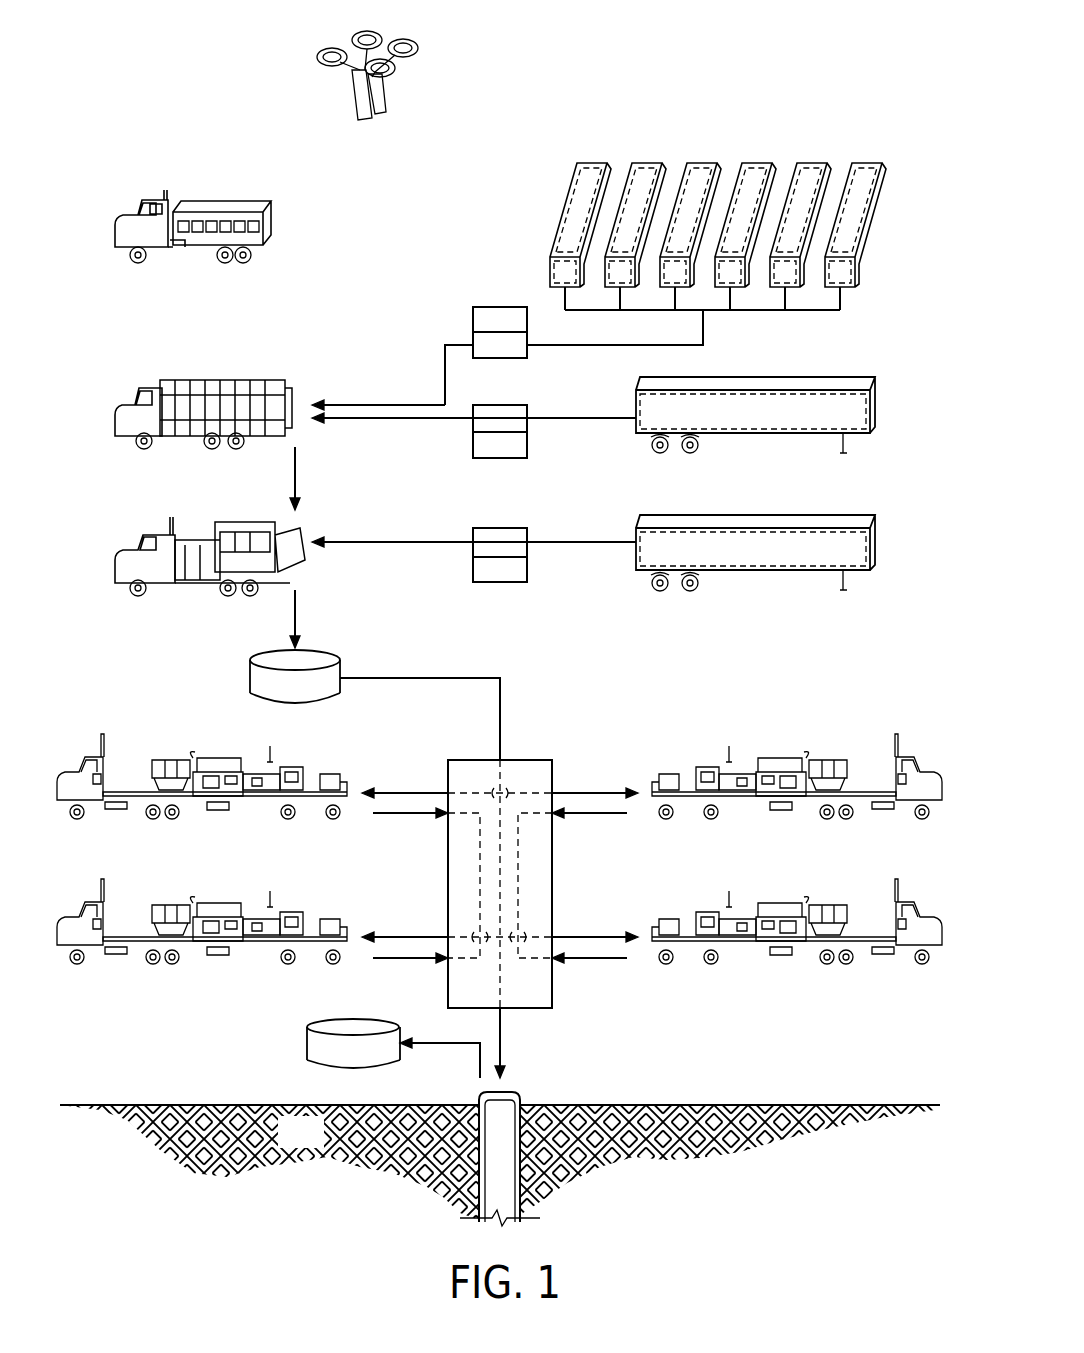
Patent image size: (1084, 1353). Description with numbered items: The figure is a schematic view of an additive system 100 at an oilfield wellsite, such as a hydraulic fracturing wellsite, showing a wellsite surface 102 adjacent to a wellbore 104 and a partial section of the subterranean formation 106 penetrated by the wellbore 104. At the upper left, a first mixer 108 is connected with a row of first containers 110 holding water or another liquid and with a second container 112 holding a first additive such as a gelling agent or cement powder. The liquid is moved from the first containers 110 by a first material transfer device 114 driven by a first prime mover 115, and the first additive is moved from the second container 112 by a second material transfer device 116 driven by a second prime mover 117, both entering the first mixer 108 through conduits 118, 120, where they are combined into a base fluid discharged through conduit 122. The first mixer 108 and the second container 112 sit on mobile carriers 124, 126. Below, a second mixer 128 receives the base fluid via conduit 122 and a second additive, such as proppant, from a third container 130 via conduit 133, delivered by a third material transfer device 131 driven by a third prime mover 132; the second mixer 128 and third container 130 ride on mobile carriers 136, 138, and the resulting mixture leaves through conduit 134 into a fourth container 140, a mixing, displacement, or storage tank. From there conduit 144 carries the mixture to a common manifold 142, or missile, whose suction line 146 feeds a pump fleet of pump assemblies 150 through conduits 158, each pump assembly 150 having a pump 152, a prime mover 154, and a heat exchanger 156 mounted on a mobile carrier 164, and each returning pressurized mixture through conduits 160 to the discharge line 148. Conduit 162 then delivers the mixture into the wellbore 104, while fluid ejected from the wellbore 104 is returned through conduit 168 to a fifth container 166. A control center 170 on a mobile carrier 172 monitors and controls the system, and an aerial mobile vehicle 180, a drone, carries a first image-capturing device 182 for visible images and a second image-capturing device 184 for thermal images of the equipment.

The additive system 100 is at (176, 40).
The wellsite surface 102 is at (728, 1105).
The wellbore 104 is at (515, 1173).
The subterranean formation 106 is at (282, 1146).
The first mixer 108 is at (177, 381).
The first containers 110 is at (595, 163).
The second container 112 is at (776, 413).
The first material transfer device 114 is at (470, 335).
The first prime mover 115 is at (497, 307).
The second material transfer device 116 is at (500, 405).
The second prime mover 117 is at (528, 445).
The conduit 118 is at (388, 405).
The conduit 120 is at (418, 420).
The conduit 122 is at (300, 465).
The mobile carrier 124 is at (148, 390).
The mobile carrier 126 is at (693, 453).
The second mixer 128 is at (190, 529).
The third container 130 is at (776, 550).
The third material transfer device 131 is at (500, 528).
The third prime mover 132 is at (528, 570).
The conduit 133 is at (380, 541).
The conduit 134 is at (300, 615).
The mobile carrier 136 is at (162, 537).
The mobile carrier 138 is at (693, 590).
The fourth container 140 is at (252, 660).
The common manifold 142 is at (529, 866).
The conduit 144 is at (420, 678).
The suction line 146 is at (498, 770).
The discharge line 148 is at (500, 982).
The pump assembly 150 is at (499, 818).
The pump 152 is at (288, 766).
The prime mover 154 is at (224, 757).
The heat exchanger 156 is at (172, 762).
The conduit 158 is at (408, 793).
The conduit 160 is at (402, 813).
The conduit 162 is at (503, 1040).
The mobile carrier 164 is at (103, 767).
The fifth container 166 is at (307, 1040).
The conduit 168 is at (443, 1045).
The control center 170 is at (173, 199).
The mobile carrier 172 is at (160, 212).
The aerial mobile vehicle 180 is at (346, 61).
The first image-capturing device 182 is at (352, 92).
The second image-capturing device 184 is at (383, 90).